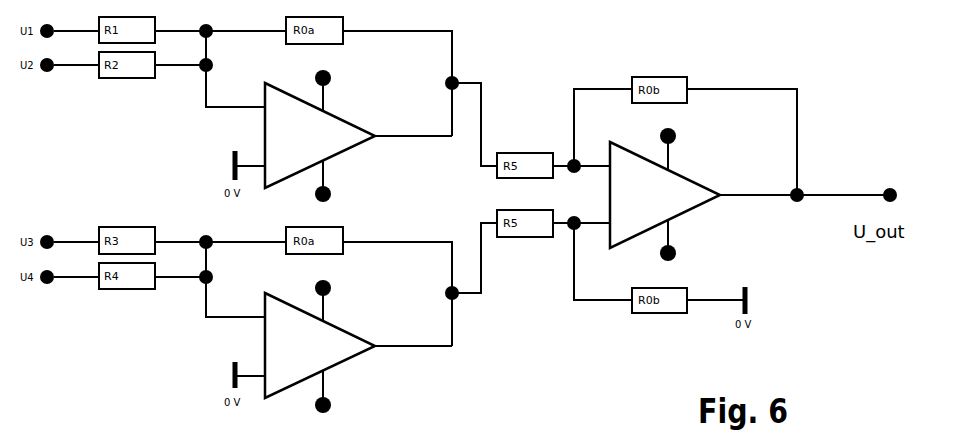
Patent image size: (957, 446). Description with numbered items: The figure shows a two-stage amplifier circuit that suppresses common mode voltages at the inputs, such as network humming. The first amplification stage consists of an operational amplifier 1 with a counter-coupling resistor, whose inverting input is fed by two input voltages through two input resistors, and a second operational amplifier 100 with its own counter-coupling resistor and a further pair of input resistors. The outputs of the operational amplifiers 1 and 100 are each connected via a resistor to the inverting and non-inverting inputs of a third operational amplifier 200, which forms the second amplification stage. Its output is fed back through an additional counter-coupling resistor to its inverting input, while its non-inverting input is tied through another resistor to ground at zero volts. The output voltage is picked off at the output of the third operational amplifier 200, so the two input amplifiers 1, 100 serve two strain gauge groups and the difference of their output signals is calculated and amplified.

The operational amplifier 1 is at (340, 115).
The second operational amplifier 100 is at (347, 323).
The third operational amplifier 200 is at (697, 180).